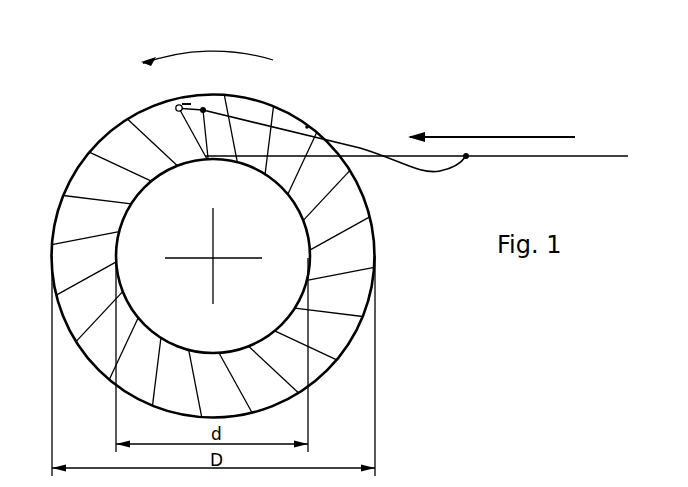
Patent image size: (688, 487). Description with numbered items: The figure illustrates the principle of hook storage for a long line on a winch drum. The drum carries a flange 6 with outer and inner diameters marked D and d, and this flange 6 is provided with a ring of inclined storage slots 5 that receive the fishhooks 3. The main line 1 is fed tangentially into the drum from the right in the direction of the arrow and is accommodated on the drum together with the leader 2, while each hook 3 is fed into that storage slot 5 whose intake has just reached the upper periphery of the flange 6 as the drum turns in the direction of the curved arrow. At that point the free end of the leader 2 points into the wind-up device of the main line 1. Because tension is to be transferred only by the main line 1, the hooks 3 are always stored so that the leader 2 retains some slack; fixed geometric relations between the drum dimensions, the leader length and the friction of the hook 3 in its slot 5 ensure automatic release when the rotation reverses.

The main line 1 is at (433, 156).
The leader 2 is at (237, 117).
The fishhook 3 is at (182, 106).
The storage slot 5 is at (275, 123).
The flange 6 is at (307, 127).